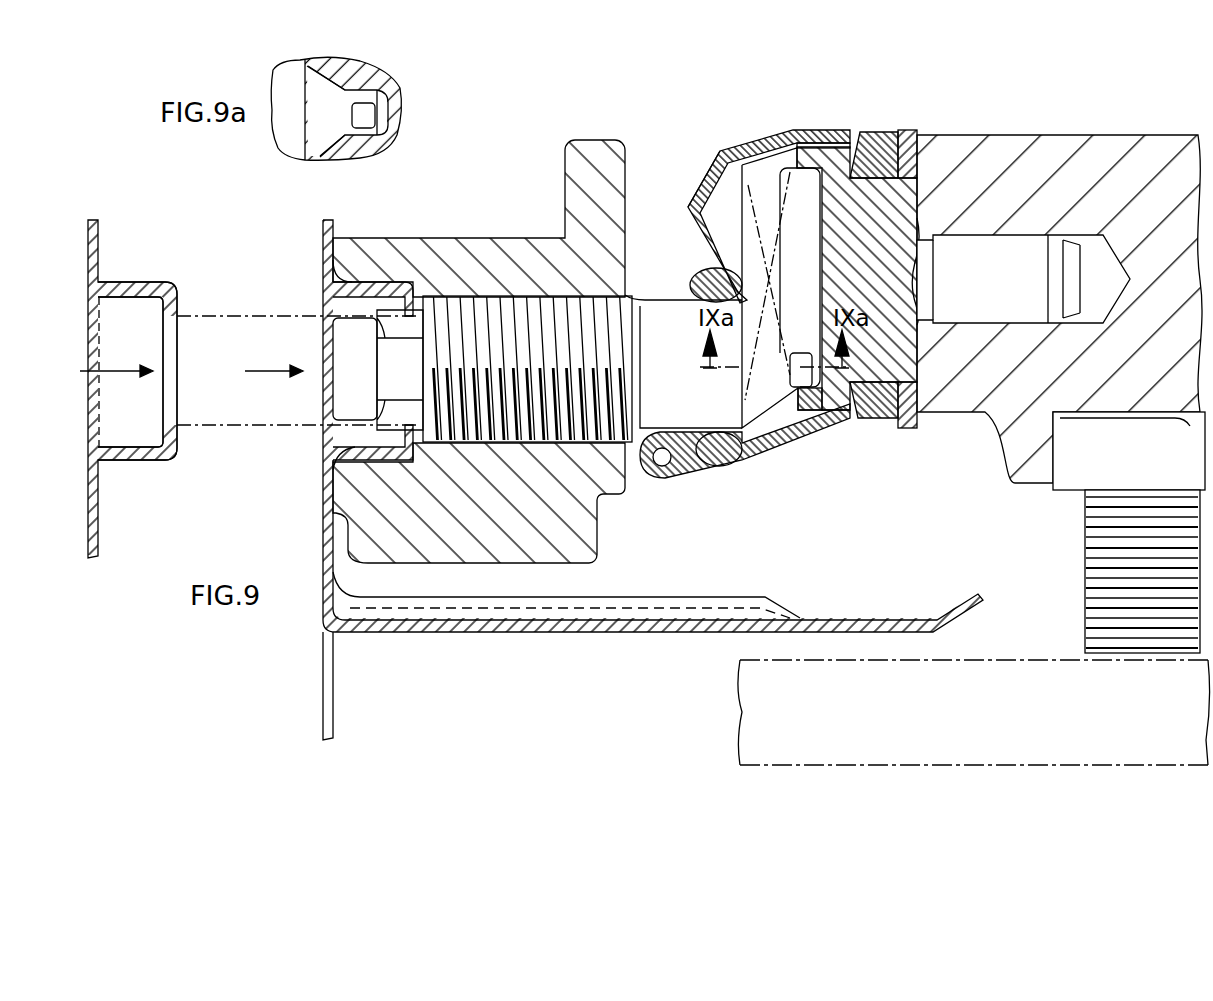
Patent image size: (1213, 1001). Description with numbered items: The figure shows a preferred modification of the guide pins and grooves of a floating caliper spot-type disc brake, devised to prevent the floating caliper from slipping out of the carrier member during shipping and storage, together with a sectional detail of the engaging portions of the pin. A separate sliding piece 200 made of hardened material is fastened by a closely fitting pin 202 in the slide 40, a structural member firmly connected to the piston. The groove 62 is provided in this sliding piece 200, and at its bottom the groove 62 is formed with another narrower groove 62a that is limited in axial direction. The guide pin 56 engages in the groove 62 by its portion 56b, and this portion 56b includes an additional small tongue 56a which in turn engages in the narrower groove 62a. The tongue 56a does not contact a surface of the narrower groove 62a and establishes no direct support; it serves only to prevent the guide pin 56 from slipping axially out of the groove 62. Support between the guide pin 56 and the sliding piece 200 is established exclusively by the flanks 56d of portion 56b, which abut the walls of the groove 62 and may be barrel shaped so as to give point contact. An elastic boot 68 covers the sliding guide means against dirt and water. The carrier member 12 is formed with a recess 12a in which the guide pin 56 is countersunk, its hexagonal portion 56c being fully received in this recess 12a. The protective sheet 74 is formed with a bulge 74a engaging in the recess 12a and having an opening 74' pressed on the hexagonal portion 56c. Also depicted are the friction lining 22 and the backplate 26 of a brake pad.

In FIG. 9, the carrier member 12 is at (530, 267).
In FIG. 9, the recess 12a is at (296, 337).
In FIG. 9, the friction lining 22 is at (1092, 548).
In FIG. 9, the backplate 26 is at (1144, 459).
In FIG. 9, the slide 40 is at (1055, 157).
In FIG. 9a, the guide pin 56 is at (290, 88).
In FIG. 9, the guide pin 56 is at (667, 362).
In FIG. 9a, the tongue 56a is at (358, 108).
In FIG. 9, the tongue 56a is at (813, 367).
In FIG. 9a, the portion of guide pin 56b is at (318, 90).
In FIG. 9, the portion of guide pin 56b is at (748, 356).
In FIG. 9, the hexagonal portion 56c is at (390, 373).
In FIG. 9a, the flanks 56d is at (335, 80).
In FIG. 9, the flanks 56d is at (712, 268).
In FIG. 9, the groove 62 is at (722, 163).
In FIG. 9a, the narrower groove 62a is at (377, 100).
In FIG. 9, the narrower groove 62a is at (795, 150).
In FIG. 9, the elastic boot 68 is at (690, 222).
In FIG. 9, the protective sheet 74 is at (535, 480).
In FIG. 9, the bulge 74a is at (152, 282).
In FIG. 9, the opening 74' is at (481, 467).
In FIG. 9a, the sliding piece 200 is at (388, 135).
In FIG. 9, the sliding piece 200 is at (890, 395).
In FIG. 9, the pin 202 is at (1010, 292).